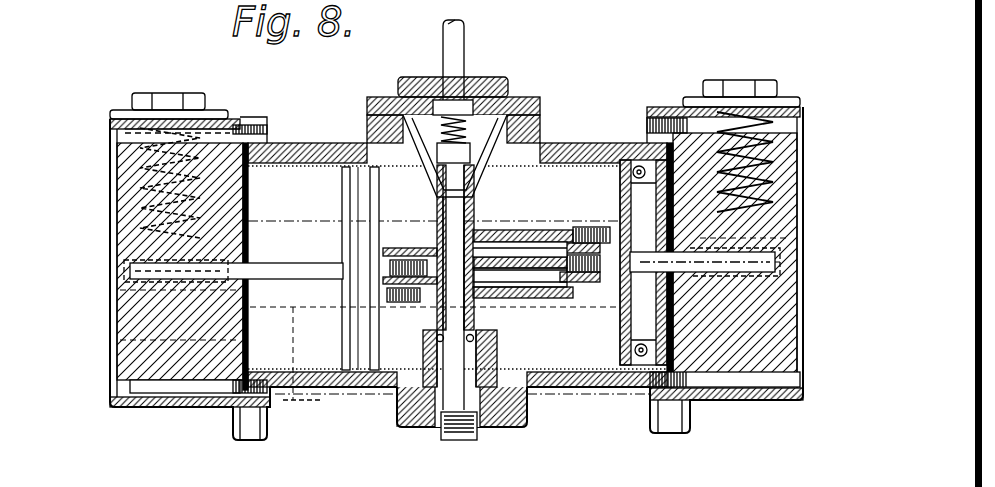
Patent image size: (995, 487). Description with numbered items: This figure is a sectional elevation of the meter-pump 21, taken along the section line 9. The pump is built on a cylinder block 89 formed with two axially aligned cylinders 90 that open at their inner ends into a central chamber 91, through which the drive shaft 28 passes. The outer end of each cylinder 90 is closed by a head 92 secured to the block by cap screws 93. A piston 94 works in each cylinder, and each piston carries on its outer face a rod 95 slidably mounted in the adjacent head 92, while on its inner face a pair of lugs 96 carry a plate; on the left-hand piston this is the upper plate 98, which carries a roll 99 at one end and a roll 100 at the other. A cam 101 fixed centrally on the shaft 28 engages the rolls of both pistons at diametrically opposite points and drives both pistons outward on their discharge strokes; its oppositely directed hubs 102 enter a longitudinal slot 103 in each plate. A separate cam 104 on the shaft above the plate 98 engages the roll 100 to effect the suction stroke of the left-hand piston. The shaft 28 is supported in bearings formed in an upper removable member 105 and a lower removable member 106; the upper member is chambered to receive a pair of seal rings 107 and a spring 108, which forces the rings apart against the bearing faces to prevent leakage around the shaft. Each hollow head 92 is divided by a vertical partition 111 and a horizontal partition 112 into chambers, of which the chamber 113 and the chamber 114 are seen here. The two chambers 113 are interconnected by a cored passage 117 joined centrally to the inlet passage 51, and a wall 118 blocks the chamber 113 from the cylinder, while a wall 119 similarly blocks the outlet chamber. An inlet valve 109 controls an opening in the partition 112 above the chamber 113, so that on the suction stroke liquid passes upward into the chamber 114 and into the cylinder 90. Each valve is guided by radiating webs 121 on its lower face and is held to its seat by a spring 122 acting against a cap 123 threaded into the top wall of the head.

The section line 9 is at (245, 222).
The meter-pump 21 is at (574, 132).
The drive shaft 28 is at (462, 54).
The inlet passage 51 is at (445, 320).
The cylinder block 89 is at (580, 388).
The cylinder 90 is at (270, 147).
The central chamber 91 is at (392, 392).
The head 92 is at (118, 356).
The cap screw 93 is at (232, 122).
The piston 94 is at (370, 388).
The rod 95 is at (278, 265).
The lug 96 is at (392, 238).
The upper plate 98 is at (555, 232).
The roll 99 is at (388, 268).
The roll 100 is at (388, 295).
The cam 101 is at (530, 250).
The hub 102 is at (487, 245).
The longitudinal slot 103 is at (495, 232).
The cam 104 is at (434, 240).
The upper removable member 105 is at (458, 125).
The lower removable member 106 is at (445, 412).
The seal ring 107 is at (405, 100).
The spring 108 is at (505, 130).
The inlet valve 109 is at (118, 257).
The vertical partition 111 is at (218, 395).
The horizontal partition 112 is at (800, 238).
The chamber 113 is at (118, 340).
The chamber 114 is at (120, 190).
The cored passage 117 is at (300, 400).
The wall 118 is at (715, 400).
The wall 119 is at (247, 364).
The radiating web 121 is at (118, 305).
The spring 122 is at (118, 170).
The cap 123 is at (205, 70).